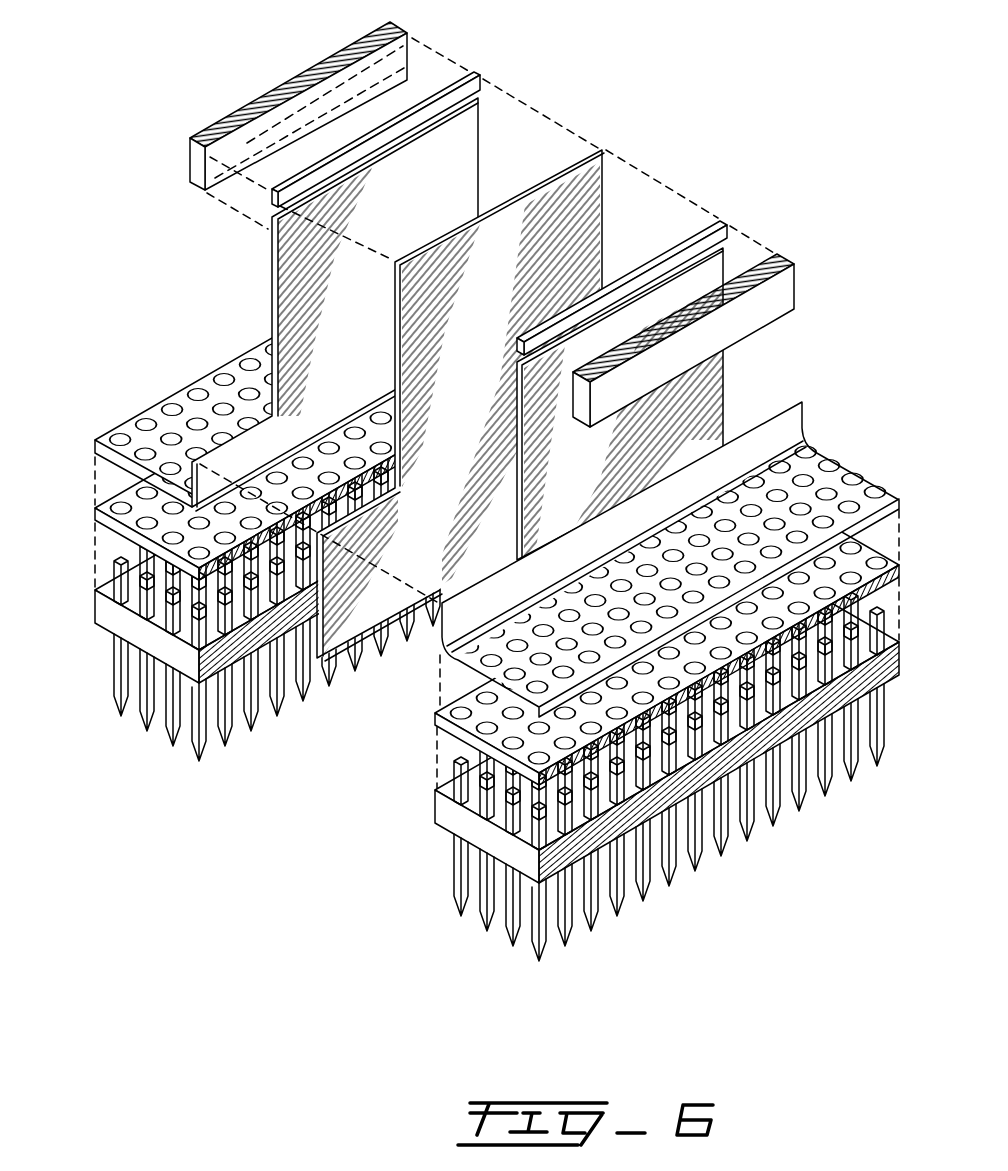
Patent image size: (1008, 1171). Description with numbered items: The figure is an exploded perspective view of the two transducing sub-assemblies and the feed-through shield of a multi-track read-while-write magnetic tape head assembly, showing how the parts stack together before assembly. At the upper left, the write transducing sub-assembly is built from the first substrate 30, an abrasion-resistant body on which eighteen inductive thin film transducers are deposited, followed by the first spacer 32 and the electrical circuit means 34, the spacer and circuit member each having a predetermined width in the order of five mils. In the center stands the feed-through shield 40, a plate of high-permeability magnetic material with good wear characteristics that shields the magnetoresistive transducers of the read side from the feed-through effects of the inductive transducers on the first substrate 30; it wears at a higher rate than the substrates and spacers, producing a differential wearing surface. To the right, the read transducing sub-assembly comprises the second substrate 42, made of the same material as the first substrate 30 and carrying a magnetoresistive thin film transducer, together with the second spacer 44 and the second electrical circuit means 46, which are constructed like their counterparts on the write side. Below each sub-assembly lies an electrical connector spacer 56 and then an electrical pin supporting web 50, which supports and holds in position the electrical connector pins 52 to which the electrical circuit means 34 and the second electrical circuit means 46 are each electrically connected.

The first substrate 30 is at (406, 42).
The first spacer 32 is at (480, 80).
The electrical circuit means 34 is at (473, 167).
The feed-through shield 40 is at (594, 235).
The second substrate 42 is at (793, 282).
The second spacer 44 is at (718, 232).
The second electrical circuit means 46 is at (795, 426).
The electrical pin supporting web 50 is at (107, 618).
The electrical connector pins 52 is at (192, 745).
The electrical connector spacer 56 is at (97, 521).